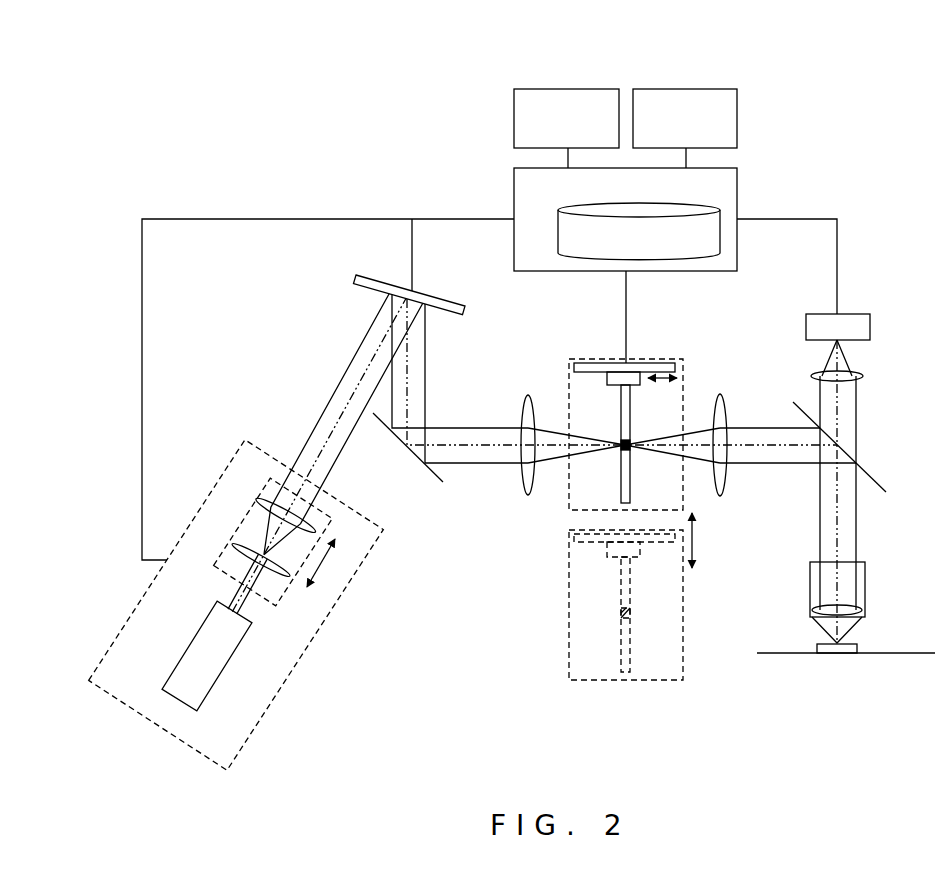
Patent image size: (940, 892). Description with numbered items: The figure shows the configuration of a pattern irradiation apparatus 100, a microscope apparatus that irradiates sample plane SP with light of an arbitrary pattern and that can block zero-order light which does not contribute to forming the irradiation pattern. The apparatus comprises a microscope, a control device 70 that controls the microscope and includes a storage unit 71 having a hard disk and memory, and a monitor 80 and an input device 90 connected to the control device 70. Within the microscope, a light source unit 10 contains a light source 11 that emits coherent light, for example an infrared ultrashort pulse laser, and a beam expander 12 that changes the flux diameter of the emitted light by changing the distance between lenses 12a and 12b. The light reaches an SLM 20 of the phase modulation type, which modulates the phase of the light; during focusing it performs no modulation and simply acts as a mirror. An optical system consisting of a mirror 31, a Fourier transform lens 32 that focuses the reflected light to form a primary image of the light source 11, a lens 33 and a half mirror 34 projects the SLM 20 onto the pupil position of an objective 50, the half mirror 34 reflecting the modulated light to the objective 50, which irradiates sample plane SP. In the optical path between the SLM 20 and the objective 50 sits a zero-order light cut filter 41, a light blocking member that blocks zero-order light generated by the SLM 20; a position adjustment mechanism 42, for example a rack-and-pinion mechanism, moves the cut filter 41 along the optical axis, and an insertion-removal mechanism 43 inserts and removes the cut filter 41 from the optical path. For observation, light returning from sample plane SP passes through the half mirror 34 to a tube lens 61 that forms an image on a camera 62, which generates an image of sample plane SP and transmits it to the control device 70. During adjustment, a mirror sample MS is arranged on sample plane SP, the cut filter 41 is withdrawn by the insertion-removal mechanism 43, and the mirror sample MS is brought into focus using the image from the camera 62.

The pattern irradiation apparatus 100 is at (929, 86).
The light source unit 10 is at (298, 668).
The light source 11 is at (217, 682).
The beam expander 12 is at (290, 590).
The lens 12a is at (257, 503).
The lens 12b is at (236, 546).
The SLM 20 is at (362, 292).
The mirror 31 is at (404, 443).
The Fourier transform lens 32 is at (528, 393).
The lens 33 is at (720, 395).
The half mirror 34 is at (877, 480).
The 0-order light cut filter 41 is at (622, 482).
The position adjustment mechanism 42 is at (674, 366).
The insertion-removal mechanism 43 is at (693, 535).
The objective 50 is at (865, 588).
The tube lens 61 is at (863, 376).
The camera 62 is at (870, 330).
The control device 70 is at (513, 186).
The storage unit 71 is at (720, 210).
The monitor 80 is at (580, 88).
The input device 90 is at (688, 88).
The mirror sample MS is at (857, 650).
The sample plane SP is at (877, 655).